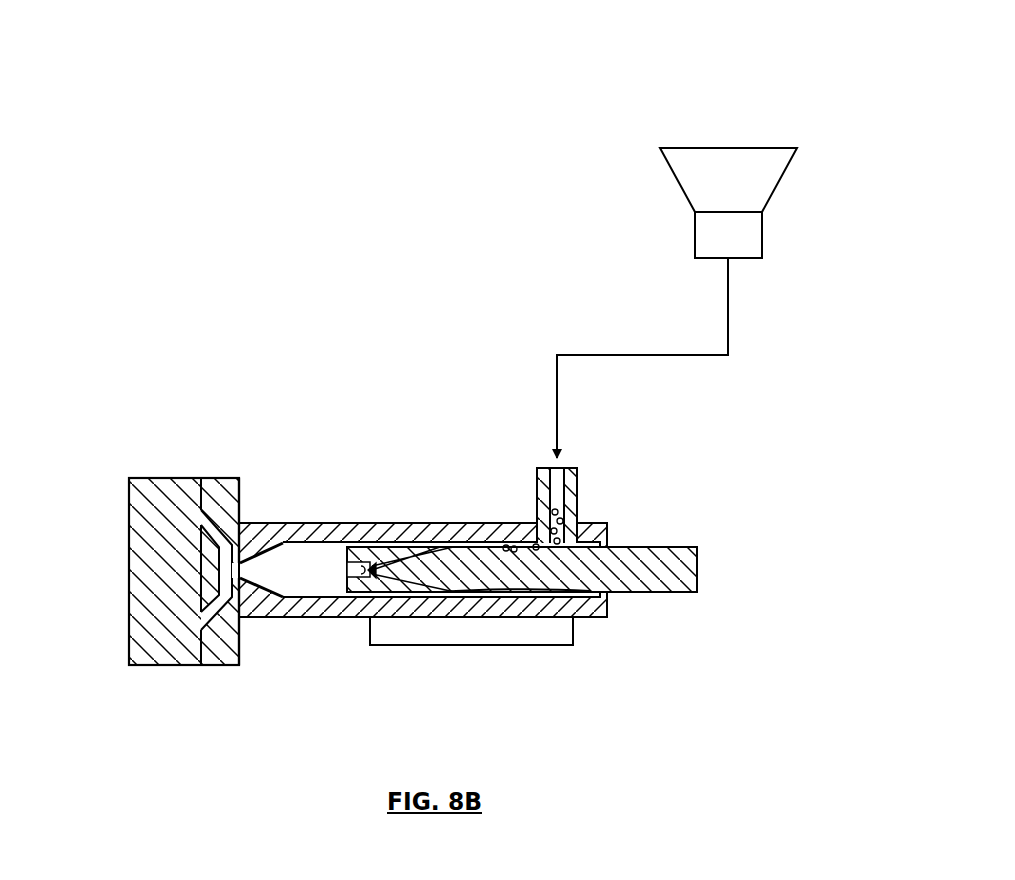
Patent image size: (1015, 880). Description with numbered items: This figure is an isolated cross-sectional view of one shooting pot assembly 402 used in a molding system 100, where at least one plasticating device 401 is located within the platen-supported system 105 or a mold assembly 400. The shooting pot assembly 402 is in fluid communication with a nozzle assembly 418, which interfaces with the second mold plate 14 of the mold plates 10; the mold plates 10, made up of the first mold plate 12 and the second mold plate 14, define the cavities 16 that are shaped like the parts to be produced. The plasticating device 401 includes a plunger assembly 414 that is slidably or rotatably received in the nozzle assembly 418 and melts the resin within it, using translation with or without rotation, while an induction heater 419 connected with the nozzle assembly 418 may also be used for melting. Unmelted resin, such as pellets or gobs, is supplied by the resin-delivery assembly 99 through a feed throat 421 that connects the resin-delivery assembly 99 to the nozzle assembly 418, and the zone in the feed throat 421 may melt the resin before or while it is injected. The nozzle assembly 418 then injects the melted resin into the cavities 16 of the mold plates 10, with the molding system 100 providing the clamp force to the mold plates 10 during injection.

The mold plates 10 is at (122, 505).
The first mold plate 12 is at (140, 626).
The second mold plate 14 is at (235, 650).
The cavities 16 is at (222, 553).
The resin-delivery assembly 99 is at (783, 175).
The molding system 100 is at (906, 133).
The platen-supported system 105 is at (240, 228).
The mold assembly 400 is at (392, 291).
The plasticating device 401 is at (438, 340).
The shooting pot assembly 402 is at (302, 412).
The plunger assembly 414 is at (461, 562).
The nozzle assembly 418 is at (325, 522).
The induction heater 419 is at (573, 627).
The feed throat 421 is at (578, 500).